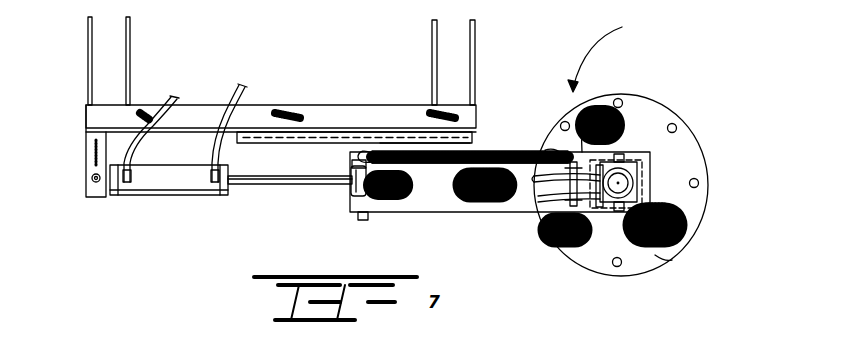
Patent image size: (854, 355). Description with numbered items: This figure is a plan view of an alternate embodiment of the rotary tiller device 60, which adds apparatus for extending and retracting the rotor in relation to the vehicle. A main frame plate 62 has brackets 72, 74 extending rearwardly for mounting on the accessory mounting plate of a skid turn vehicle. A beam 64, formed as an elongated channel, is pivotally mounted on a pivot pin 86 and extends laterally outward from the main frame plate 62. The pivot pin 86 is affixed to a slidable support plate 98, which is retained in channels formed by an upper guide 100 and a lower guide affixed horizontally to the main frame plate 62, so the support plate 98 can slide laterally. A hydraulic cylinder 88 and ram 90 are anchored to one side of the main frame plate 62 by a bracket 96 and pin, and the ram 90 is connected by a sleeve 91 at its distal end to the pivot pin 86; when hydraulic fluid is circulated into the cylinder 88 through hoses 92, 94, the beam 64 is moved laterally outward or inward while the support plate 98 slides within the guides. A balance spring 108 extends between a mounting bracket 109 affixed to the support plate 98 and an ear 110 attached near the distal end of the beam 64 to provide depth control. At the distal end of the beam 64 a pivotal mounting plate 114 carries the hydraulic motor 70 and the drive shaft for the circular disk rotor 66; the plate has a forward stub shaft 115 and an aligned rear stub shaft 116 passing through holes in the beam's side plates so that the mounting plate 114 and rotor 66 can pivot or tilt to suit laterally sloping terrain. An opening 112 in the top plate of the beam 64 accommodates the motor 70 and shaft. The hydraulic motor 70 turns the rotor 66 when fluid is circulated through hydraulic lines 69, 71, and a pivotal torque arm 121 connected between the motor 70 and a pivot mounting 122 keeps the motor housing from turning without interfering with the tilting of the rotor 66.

The rotary tiller device 60 is at (610, 55).
The main frame plate 62 is at (250, 130).
The beam 64 is at (428, 212).
The disk rotor 66 is at (686, 128).
The hydraulic line 69 is at (548, 148).
The hydraulic motor 70 is at (626, 181).
The hydraulic line 71 is at (540, 205).
The bracket 72 is at (472, 45).
The bracket 74 is at (128, 51).
The pivot pin 86 is at (356, 196).
The hydraulic cylinder 88 is at (176, 196).
The ram 90 is at (289, 185).
The sleeve 91 is at (351, 167).
The hose 92 is at (163, 107).
The hose 94 is at (231, 105).
The bracket 96 is at (87, 145).
The support plate 98 is at (397, 135).
The upper guide 100 is at (290, 144).
The balance spring 108 is at (493, 150).
The mounting bracket 109 is at (356, 160).
The ear 110 is at (588, 110).
The opening 112 is at (600, 208).
The mounting plate 114 is at (648, 198).
The forward stub shaft 115 is at (660, 258).
The rear stub shaft 116 is at (620, 152).
The torque arm 121 is at (583, 230).
The pivot mounting 122 is at (560, 200).